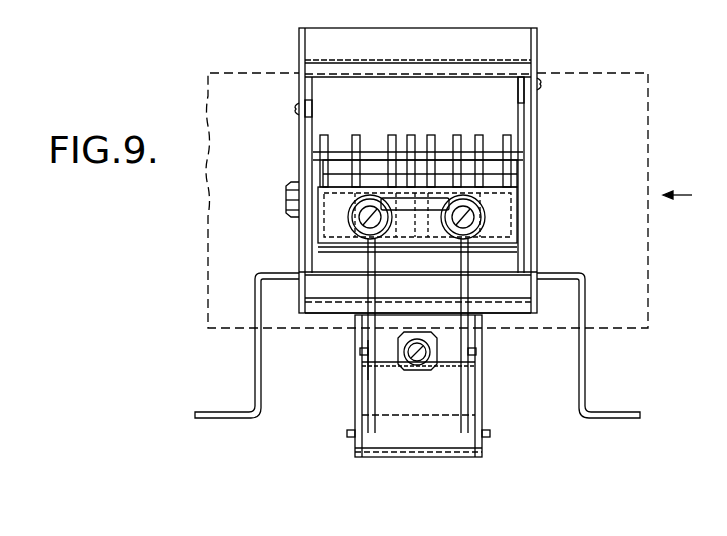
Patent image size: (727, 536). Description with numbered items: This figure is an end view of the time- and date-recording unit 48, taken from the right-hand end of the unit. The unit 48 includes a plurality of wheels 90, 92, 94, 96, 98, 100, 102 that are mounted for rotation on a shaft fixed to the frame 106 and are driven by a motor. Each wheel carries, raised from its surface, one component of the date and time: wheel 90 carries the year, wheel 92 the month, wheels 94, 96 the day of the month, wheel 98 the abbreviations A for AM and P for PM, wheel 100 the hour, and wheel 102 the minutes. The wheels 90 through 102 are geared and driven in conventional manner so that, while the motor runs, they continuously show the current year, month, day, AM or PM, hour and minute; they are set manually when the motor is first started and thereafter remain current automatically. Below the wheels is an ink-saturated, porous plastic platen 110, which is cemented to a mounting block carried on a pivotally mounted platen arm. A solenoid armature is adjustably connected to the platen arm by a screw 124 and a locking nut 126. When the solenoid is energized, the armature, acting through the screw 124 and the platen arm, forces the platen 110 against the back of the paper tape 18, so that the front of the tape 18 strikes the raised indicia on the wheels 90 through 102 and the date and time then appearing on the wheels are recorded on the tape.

The paper tape 18 is at (240, 72).
The time- and date-recording unit 48 is at (543, 45).
The wheel 90 is at (334, 152).
The wheel 92 is at (368, 155).
The wheel 94 is at (399, 157).
The wheel 96 is at (407, 157).
The wheel 98 is at (434, 163).
The wheel 100 is at (460, 163).
The wheel 102 is at (490, 163).
The frame 106 is at (303, 150).
The platen 110 is at (513, 208).
The screw 124 is at (429, 355).
The locking nut 126 is at (402, 367).